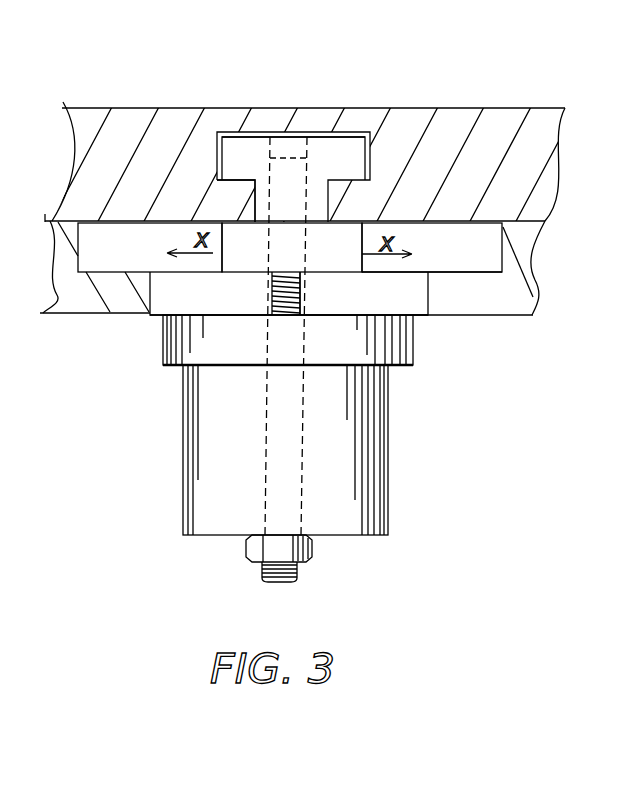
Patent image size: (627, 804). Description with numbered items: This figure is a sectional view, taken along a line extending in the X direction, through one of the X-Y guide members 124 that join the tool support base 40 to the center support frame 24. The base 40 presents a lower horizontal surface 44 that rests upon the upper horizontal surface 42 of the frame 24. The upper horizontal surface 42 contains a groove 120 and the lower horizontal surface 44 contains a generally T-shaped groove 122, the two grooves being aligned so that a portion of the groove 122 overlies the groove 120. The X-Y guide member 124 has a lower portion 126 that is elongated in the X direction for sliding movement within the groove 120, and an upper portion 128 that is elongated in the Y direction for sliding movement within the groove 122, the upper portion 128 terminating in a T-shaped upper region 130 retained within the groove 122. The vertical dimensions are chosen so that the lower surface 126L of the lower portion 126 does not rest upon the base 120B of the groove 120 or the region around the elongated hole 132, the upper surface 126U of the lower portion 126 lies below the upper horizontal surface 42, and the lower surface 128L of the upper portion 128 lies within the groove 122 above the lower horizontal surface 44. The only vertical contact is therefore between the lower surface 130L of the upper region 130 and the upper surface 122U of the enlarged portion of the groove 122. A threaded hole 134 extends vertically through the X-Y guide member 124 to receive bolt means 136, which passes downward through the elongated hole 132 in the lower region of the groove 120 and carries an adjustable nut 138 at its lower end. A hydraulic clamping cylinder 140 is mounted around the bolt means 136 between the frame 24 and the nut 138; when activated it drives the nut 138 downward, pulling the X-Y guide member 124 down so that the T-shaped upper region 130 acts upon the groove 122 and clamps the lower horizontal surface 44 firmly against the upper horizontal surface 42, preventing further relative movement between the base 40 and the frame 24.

The tool support base 40 is at (92, 106).
The upper horizontal surface 42 is at (58, 218).
The lower horizontal surface 44 is at (541, 226).
The center support frame 24 is at (44, 313).
The groove 120 is at (480, 263).
The base of the groove 120B is at (444, 275).
The groove 122 is at (330, 266).
The upper surface of the enlarged portion 122U is at (343, 180).
The X-Y guide member 124 is at (238, 286).
The lower portion 126 is at (232, 259).
The upper surface of the lower portion 126U is at (245, 210).
The lower surface of the lower portion 126L is at (317, 272).
The upper portion 128 is at (378, 166).
The lower surface of the upper portion 128L is at (333, 270).
The T-shaped upper region 130 is at (236, 147).
The lower surface of the upper region 130L is at (222, 192).
The elongated hole 132 is at (413, 328).
The threaded hole 134 is at (275, 170).
The bolt means 136 is at (270, 298).
The adjustable nut 138 is at (312, 556).
The hydraulic clamping cylinder 140 is at (340, 459).